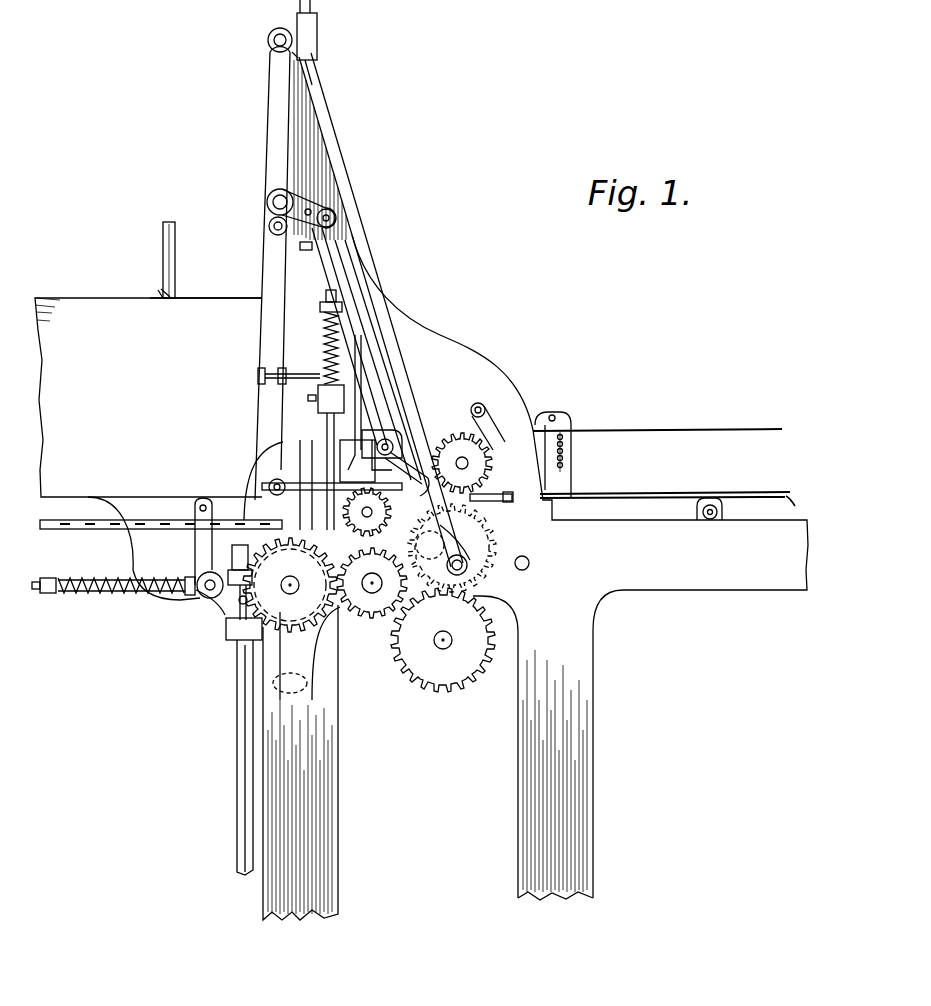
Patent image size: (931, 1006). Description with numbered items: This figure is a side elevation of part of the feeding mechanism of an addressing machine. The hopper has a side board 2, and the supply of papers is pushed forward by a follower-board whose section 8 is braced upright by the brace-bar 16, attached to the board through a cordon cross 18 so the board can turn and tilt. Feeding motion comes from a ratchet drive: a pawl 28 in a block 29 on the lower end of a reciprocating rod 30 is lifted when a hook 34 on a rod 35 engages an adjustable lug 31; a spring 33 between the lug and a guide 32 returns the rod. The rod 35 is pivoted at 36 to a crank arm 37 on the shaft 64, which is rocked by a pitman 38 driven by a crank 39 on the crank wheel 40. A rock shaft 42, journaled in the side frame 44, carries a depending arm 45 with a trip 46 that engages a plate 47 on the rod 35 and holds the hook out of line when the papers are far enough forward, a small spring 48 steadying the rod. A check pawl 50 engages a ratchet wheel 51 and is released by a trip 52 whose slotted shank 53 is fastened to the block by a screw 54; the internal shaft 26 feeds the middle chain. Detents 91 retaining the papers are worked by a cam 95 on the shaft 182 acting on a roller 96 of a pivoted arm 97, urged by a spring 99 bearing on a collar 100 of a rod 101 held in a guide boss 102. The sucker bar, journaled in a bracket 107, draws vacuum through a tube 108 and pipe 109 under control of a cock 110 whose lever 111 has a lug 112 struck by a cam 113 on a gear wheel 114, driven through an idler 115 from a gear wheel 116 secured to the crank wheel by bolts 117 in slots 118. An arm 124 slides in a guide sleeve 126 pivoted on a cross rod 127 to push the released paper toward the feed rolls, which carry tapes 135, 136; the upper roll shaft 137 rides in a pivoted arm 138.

The side board 2 is at (62, 300).
The follower-board section 8 is at (164, 251).
The brace-bar 16 is at (152, 299).
The cordon cross 18 is at (157, 292).
The internal shaft 26 is at (388, 455).
The pawl 28 is at (372, 583).
The block 29 is at (320, 578).
The reciprocating rod 30 is at (293, 485).
The lug 31 is at (318, 408).
The guide 32 is at (326, 338).
The spring 33 is at (327, 380).
The hook 34 is at (374, 436).
The rod 35 is at (340, 300).
The pivot 36 is at (334, 212).
The crank arm 37 is at (304, 206).
The pitman 38 is at (380, 350).
The crank 39 is at (495, 560).
The crank wheel 40 is at (470, 570).
The rock shaft 42 is at (270, 226).
The side frame 44 is at (316, 137).
The depending arm 45 is at (276, 296).
The trip 46 is at (258, 376).
The plate 47 is at (362, 376).
The spring 48 is at (338, 268).
The check pawl 50 is at (317, 471).
The ratchet wheel 51 is at (332, 499).
The trip 52 is at (268, 487).
The slotted shank 53 is at (357, 461).
The screw 54 is at (258, 522).
The shaft 64 is at (268, 201).
The detent 91 is at (407, 474).
The cam 95 is at (204, 570).
The anti-friction roller 96 is at (197, 578).
The pivoted arm 97 is at (195, 542).
The spring 99 is at (151, 598).
The collar 100 is at (196, 592).
The rod 101 is at (100, 596).
The guide boss 102 is at (58, 596).
The bracket 107 is at (490, 428).
The tube 108 is at (250, 468).
The pipe 109 is at (240, 680).
The cock 110 is at (230, 626).
The lever 111 is at (238, 602).
The lug 112 is at (228, 598).
The cam 113 is at (290, 683).
The gear wheel 114 is at (285, 630).
The idler 115 is at (390, 650).
The gear wheel 116 is at (443, 640).
The bolts 117 is at (492, 492).
The slots 118 is at (472, 490).
The arm 124 is at (313, 77).
The guide sleeve 126 is at (318, 50).
The cross rod 127 is at (274, 46).
The tapes 135 is at (688, 430).
The tapes 136 is at (790, 498).
The shaft 137 is at (545, 420).
The pivoted arm 138 is at (462, 440).
The shaft 182 is at (290, 585).